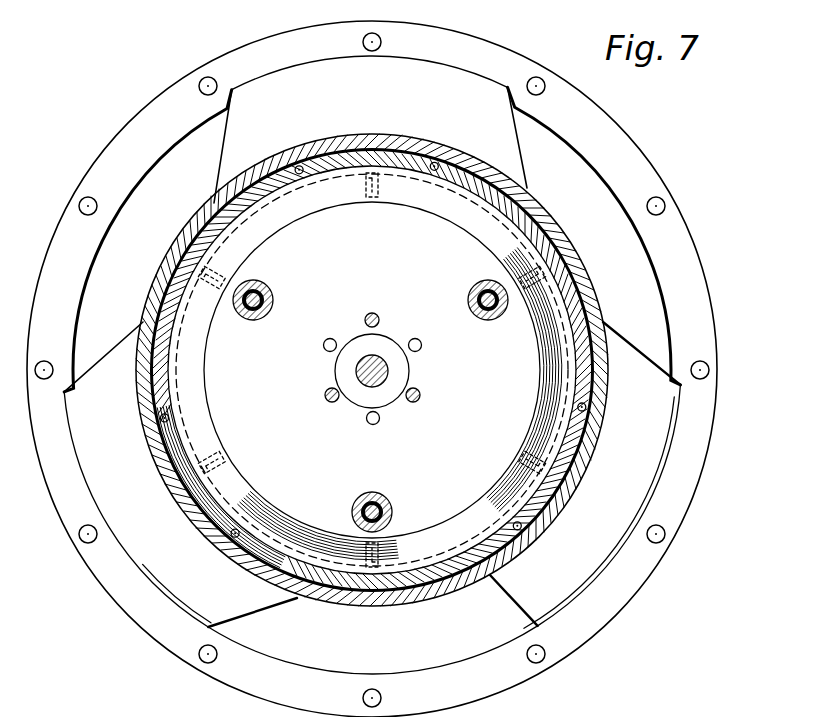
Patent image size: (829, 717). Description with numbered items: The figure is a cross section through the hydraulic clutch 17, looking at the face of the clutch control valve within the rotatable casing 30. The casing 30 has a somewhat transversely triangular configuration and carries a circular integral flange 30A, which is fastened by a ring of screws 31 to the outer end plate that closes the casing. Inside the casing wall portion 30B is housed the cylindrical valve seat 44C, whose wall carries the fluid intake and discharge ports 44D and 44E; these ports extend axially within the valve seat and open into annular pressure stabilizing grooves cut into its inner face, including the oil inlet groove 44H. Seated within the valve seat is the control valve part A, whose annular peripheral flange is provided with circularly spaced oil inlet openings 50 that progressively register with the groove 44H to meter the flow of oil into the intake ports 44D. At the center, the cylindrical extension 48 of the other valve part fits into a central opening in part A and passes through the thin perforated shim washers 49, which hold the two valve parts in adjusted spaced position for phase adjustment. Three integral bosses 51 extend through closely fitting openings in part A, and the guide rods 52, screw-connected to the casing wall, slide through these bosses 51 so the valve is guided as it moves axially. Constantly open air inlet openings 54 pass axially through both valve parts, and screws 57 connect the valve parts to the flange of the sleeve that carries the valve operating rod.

The hydraulic clutch 17 is at (684, 214).
The rotatable casing 30 is at (634, 349).
The circular integral flange 30A is at (598, 131).
The casing wall portion 30B is at (205, 213).
The screws 31 is at (659, 197).
The cylindrical valve seat 44C is at (176, 290).
The fluid intake ports 44D is at (436, 163).
The fluid discharge ports 44E is at (298, 164).
The pressure stabilizing groove 44H is at (178, 314).
The cylindrical extension 48 is at (389, 372).
The shim washers 49 is at (343, 371).
The oil inlet openings 50 is at (360, 198).
The bosses 51 is at (263, 288).
The guide rods 52 is at (272, 301).
The air inlet openings 54 is at (325, 343).
The screws 57 is at (378, 313).
The control valve part A is at (448, 268).